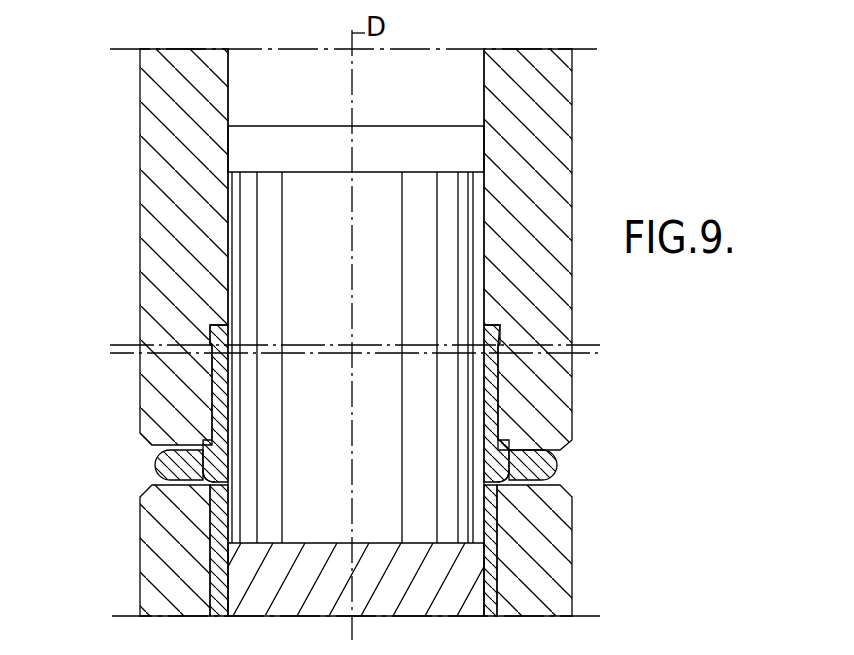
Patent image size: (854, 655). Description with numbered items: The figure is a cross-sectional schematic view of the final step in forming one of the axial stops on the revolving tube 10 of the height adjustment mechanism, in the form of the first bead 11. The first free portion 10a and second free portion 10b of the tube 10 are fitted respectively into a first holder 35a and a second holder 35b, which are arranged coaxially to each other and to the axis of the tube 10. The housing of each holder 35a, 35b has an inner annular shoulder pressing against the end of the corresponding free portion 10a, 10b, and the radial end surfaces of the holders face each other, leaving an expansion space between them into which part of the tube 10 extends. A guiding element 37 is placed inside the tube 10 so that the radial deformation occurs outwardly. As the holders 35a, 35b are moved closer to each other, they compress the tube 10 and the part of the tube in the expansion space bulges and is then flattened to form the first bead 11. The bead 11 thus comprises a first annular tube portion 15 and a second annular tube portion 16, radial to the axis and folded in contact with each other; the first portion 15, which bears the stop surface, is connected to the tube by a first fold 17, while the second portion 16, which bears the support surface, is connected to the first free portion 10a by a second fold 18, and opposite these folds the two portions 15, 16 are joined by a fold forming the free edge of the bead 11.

The second holder 35b is at (535, 90).
The first holder 35a is at (538, 542).
The second free portion 10b is at (490, 385).
The first free portion 10a is at (220, 585).
The revolving tube 10 is at (489, 573).
The guiding element 37 is at (445, 417).
The first bead 11 is at (215, 465).
The first annular tube portion 15 is at (547, 459).
The second annular tube portion 16 is at (548, 483).
The first fold 17 is at (207, 440).
The second fold 18 is at (207, 483).